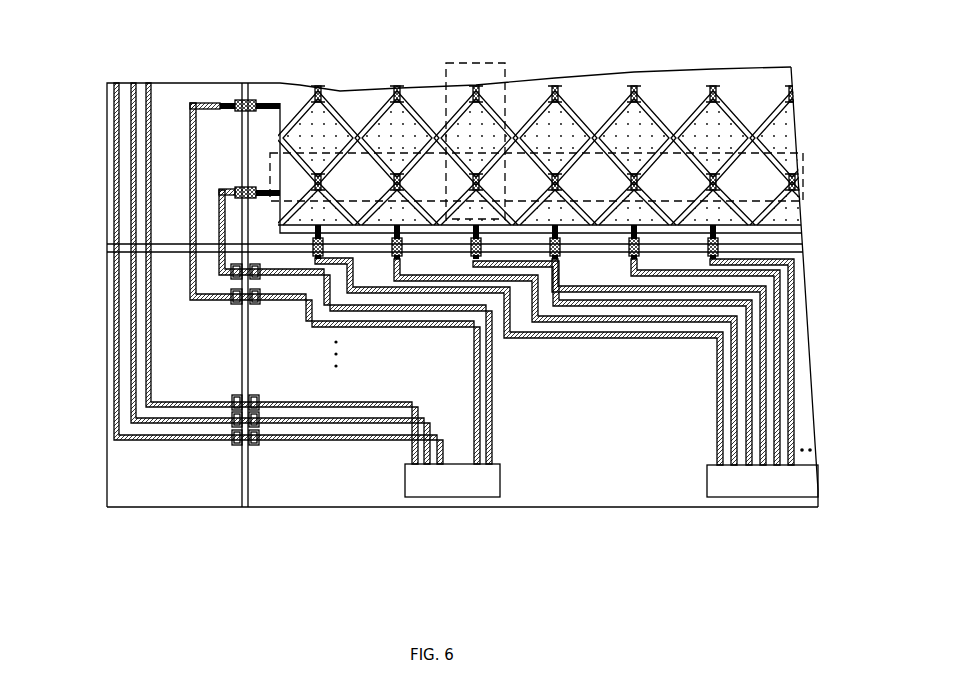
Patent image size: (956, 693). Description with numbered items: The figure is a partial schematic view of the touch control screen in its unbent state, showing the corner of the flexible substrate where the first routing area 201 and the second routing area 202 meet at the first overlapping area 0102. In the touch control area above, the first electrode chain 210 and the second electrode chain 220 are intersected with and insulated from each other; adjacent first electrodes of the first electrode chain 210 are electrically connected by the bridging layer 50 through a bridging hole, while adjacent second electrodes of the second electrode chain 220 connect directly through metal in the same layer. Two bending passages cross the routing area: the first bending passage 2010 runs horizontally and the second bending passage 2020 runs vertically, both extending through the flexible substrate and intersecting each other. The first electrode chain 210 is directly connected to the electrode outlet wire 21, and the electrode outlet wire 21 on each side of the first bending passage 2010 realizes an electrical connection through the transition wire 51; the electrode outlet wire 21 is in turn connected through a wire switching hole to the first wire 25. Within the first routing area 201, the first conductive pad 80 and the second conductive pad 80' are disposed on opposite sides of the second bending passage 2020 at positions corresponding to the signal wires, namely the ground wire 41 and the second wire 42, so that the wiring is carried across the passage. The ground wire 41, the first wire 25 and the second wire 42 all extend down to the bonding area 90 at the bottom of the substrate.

The second routing area 202 is at (107, 150).
The first wire 25 is at (818, 390).
The first overlapping area 0102 is at (127, 480).
The first routing area 201 is at (610, 485).
The first bending passage 2010 is at (107, 244).
The second bending passage 2020 is at (245, 490).
The ground wire 41 is at (117, 330).
The second wire 42 is at (193, 283).
The electrode outlet wire 21 is at (232, 98).
The transition wire 51 is at (255, 98).
The bridging layer 50 is at (633, 75).
The first electrode chain 210 is at (475, 63).
The second electrode chain 220 is at (803, 165).
The first conductive pad 80 is at (216, 469).
The second conductive pad 80' is at (277, 468).
The bonding area 90 is at (460, 478).